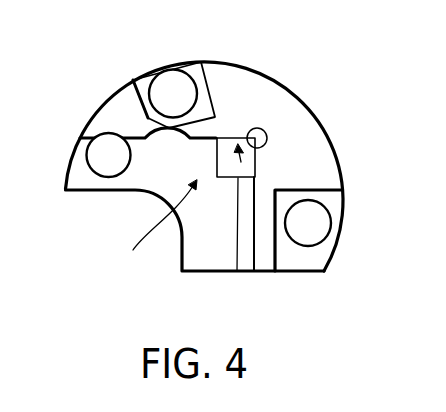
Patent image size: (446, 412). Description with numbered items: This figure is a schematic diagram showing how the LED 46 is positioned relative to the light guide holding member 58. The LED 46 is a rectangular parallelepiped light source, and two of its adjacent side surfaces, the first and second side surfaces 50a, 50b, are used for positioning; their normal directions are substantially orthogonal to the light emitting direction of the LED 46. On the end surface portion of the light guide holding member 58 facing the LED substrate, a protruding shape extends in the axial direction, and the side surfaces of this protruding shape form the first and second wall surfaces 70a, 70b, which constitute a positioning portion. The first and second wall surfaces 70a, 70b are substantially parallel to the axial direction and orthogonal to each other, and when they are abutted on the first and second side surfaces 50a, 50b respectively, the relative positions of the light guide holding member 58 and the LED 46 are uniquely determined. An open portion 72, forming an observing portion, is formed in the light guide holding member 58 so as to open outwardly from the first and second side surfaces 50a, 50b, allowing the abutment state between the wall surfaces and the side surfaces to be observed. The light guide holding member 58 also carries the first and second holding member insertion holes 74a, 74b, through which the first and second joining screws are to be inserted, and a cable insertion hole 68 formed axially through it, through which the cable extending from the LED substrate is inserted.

The LED 46 is at (264, 134).
The first side surface 50a is at (255, 157).
The second side surface 50b is at (232, 138).
The light guide holding member 58 is at (286, 82).
The cable insertion hole 68 is at (110, 150).
The first wall surface 70a is at (237, 271).
The second wall surface 70b is at (216, 150).
The open portion 72 is at (155, 230).
The first holding member insertion hole 74a is at (175, 83).
The second holding member insertion hole 74b is at (315, 227).